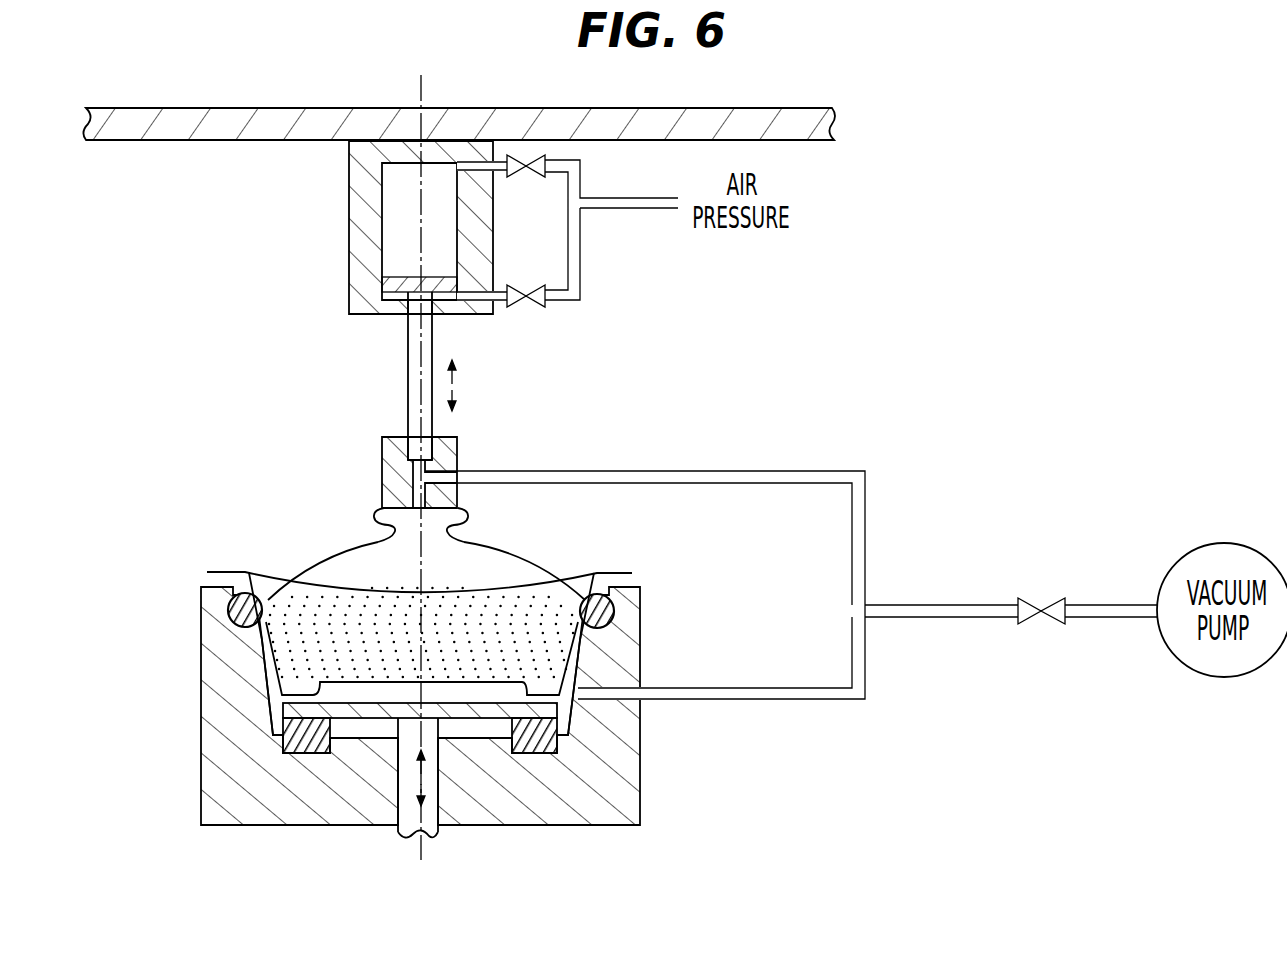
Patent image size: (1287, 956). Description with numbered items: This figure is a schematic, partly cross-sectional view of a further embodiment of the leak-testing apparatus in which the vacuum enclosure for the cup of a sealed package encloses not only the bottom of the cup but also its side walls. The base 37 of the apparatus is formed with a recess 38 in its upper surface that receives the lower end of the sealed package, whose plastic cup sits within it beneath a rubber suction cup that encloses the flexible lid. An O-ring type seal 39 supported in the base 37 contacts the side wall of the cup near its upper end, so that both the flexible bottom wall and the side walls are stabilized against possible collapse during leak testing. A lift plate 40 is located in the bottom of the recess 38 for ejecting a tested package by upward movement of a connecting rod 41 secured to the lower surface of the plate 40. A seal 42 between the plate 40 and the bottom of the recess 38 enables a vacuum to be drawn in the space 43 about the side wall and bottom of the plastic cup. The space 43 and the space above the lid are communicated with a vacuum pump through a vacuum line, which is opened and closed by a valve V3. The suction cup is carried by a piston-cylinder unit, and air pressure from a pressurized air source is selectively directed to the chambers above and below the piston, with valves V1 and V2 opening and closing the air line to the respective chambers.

The base 37 is at (620, 775).
The recess 38 is at (267, 710).
The O-ring type seal 39 is at (630, 638).
The lift plate 40 is at (297, 752).
The connecting rod 41 is at (427, 828).
The seal 42 is at (560, 722).
The space 43 is at (328, 692).
The valve V1 is at (526, 182).
The valve V2 is at (526, 312).
The valve V3 is at (1041, 596).